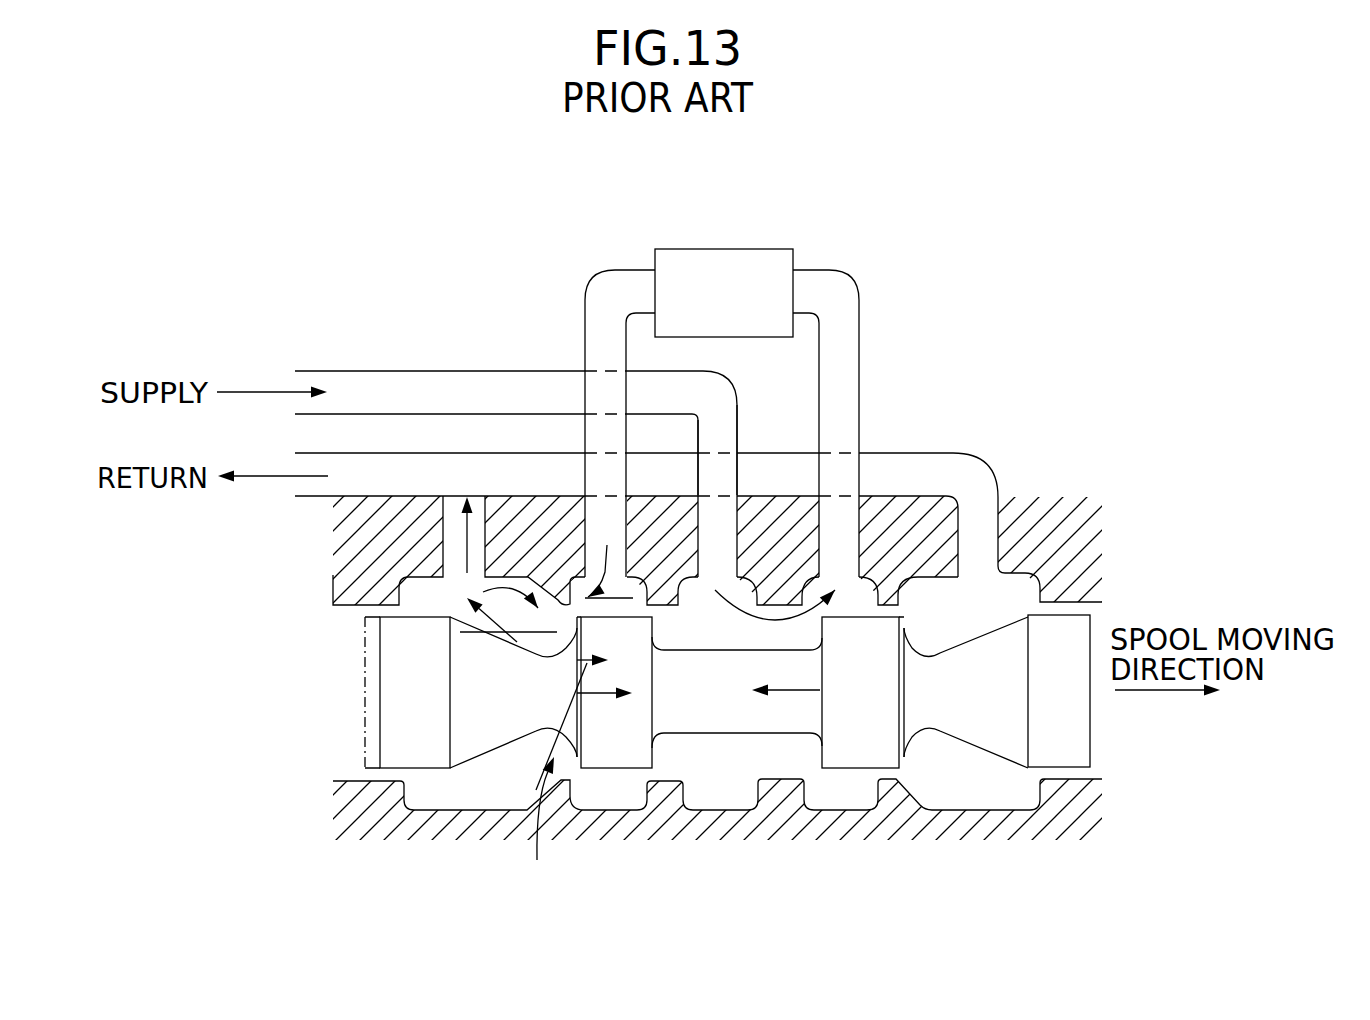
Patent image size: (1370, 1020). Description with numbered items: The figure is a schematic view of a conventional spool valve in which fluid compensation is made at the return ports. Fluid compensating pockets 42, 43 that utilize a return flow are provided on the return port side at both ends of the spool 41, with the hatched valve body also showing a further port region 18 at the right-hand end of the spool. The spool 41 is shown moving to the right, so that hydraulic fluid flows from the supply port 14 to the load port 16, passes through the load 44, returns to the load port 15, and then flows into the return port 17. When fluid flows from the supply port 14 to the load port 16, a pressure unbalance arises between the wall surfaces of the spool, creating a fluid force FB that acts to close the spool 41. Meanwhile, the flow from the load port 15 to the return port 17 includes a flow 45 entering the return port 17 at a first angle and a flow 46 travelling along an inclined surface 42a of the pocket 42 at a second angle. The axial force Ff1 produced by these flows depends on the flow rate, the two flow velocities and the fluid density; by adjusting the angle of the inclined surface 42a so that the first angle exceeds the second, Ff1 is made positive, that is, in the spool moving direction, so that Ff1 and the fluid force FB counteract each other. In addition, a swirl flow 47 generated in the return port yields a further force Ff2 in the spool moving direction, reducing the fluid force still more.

The load 44 is at (733, 249).
The return port 17 is at (405, 606).
The swirl flow 47 is at (522, 596).
The flow 45 is at (586, 578).
The supply port 14 is at (742, 578).
The load port 16 is at (873, 572).
The return port (right) 18 is at (1018, 568).
The flow 46 is at (505, 630).
The fluid compensating pocket 42 is at (577, 770).
The inclined surface 42a is at (530, 736).
The force Ff2 is at (545, 830).
The axial force Ff1 is at (585, 668).
The spool 41 is at (763, 725).
The load port 15 is at (701, 737).
The fluid force FB is at (790, 695).
The fluid compensating pocket 43 is at (970, 781).